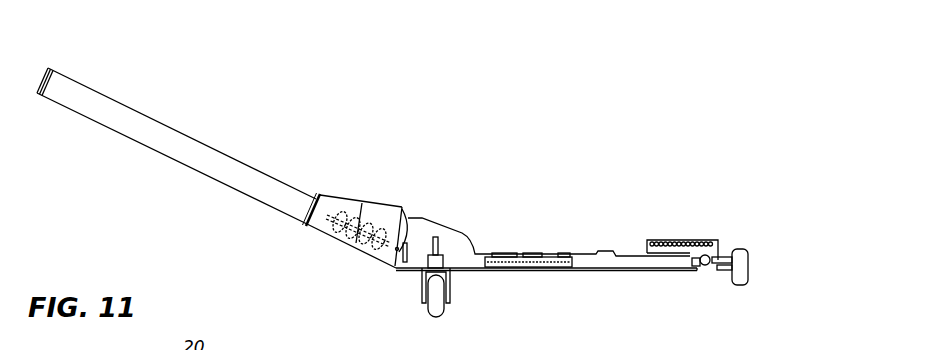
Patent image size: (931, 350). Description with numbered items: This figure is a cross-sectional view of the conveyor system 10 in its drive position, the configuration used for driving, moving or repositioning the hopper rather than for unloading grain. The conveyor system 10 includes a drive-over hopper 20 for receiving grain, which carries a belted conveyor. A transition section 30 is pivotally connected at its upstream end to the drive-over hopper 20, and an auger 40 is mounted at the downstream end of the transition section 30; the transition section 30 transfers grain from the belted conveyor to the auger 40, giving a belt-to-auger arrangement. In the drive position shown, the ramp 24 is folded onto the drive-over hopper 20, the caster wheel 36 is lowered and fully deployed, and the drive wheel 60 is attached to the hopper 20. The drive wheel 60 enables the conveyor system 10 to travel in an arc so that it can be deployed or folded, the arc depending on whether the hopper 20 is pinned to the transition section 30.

The conveyor system 10 is at (633, 138).
The drive-over hopper 20 is at (525, 255).
The ramp 24 is at (707, 250).
The transition section 30 is at (347, 207).
The caster wheel 36 is at (443, 310).
The auger 40 is at (120, 123).
The drive wheel 60 is at (718, 267).